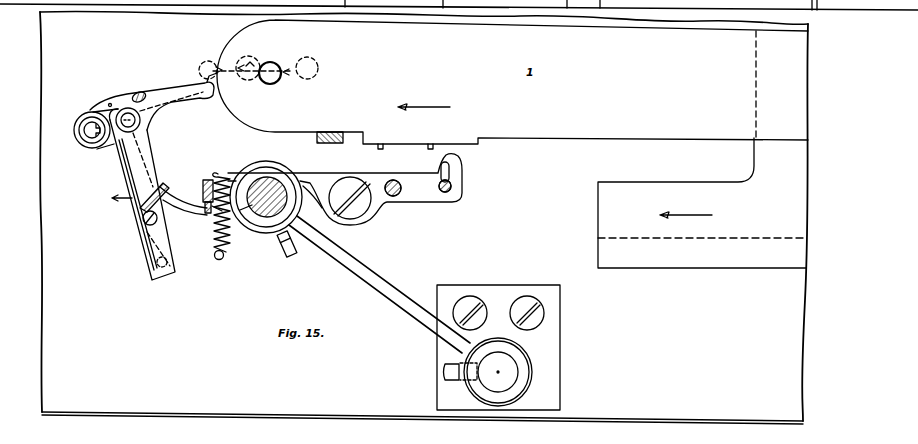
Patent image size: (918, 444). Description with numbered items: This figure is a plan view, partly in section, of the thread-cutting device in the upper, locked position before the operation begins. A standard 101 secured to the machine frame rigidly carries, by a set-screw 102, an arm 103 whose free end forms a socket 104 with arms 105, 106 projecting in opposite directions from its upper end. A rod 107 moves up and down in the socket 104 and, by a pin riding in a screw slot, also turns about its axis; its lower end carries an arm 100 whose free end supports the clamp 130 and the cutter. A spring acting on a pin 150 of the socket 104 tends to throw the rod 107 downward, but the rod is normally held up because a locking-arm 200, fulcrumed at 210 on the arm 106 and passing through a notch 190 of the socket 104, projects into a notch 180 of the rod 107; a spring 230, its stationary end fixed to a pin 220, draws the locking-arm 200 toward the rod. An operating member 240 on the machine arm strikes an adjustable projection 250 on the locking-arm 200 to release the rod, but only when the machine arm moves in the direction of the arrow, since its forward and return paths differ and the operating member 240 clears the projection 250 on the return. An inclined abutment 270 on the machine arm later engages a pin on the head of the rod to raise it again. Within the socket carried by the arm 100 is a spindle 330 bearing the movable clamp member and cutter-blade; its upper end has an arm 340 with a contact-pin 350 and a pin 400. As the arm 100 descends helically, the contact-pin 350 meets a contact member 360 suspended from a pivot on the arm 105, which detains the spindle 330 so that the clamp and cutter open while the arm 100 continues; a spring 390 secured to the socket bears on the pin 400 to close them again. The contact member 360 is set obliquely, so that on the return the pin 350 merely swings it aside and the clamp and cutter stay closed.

The arm 100 is at (171, 197).
The standard 101 is at (512, 373).
The set-screw 102 is at (445, 373).
The arm 103 is at (383, 283).
The socket 104 is at (256, 226).
The arm 105 is at (210, 214).
The arm 106 is at (322, 207).
The rod 107 is at (274, 222).
The clamp 130 is at (181, 103).
The pin 150 is at (294, 257).
The notch 180 is at (249, 205).
The notch 190 is at (278, 185).
The locking-arm 200 is at (314, 178).
The fulcrum 210 is at (362, 210).
The pin 220 is at (222, 260).
The spring 230 is at (217, 241).
The operating member 240 is at (470, 158).
The projection 250 is at (447, 163).
The inclined abutment 270 is at (329, 128).
The spindle 330 is at (136, 120).
The arm 340 is at (158, 238).
The contact-pin 350 is at (145, 220).
The contact member 360 is at (170, 185).
The spring 390 is at (118, 162).
The pin 400 is at (160, 263).